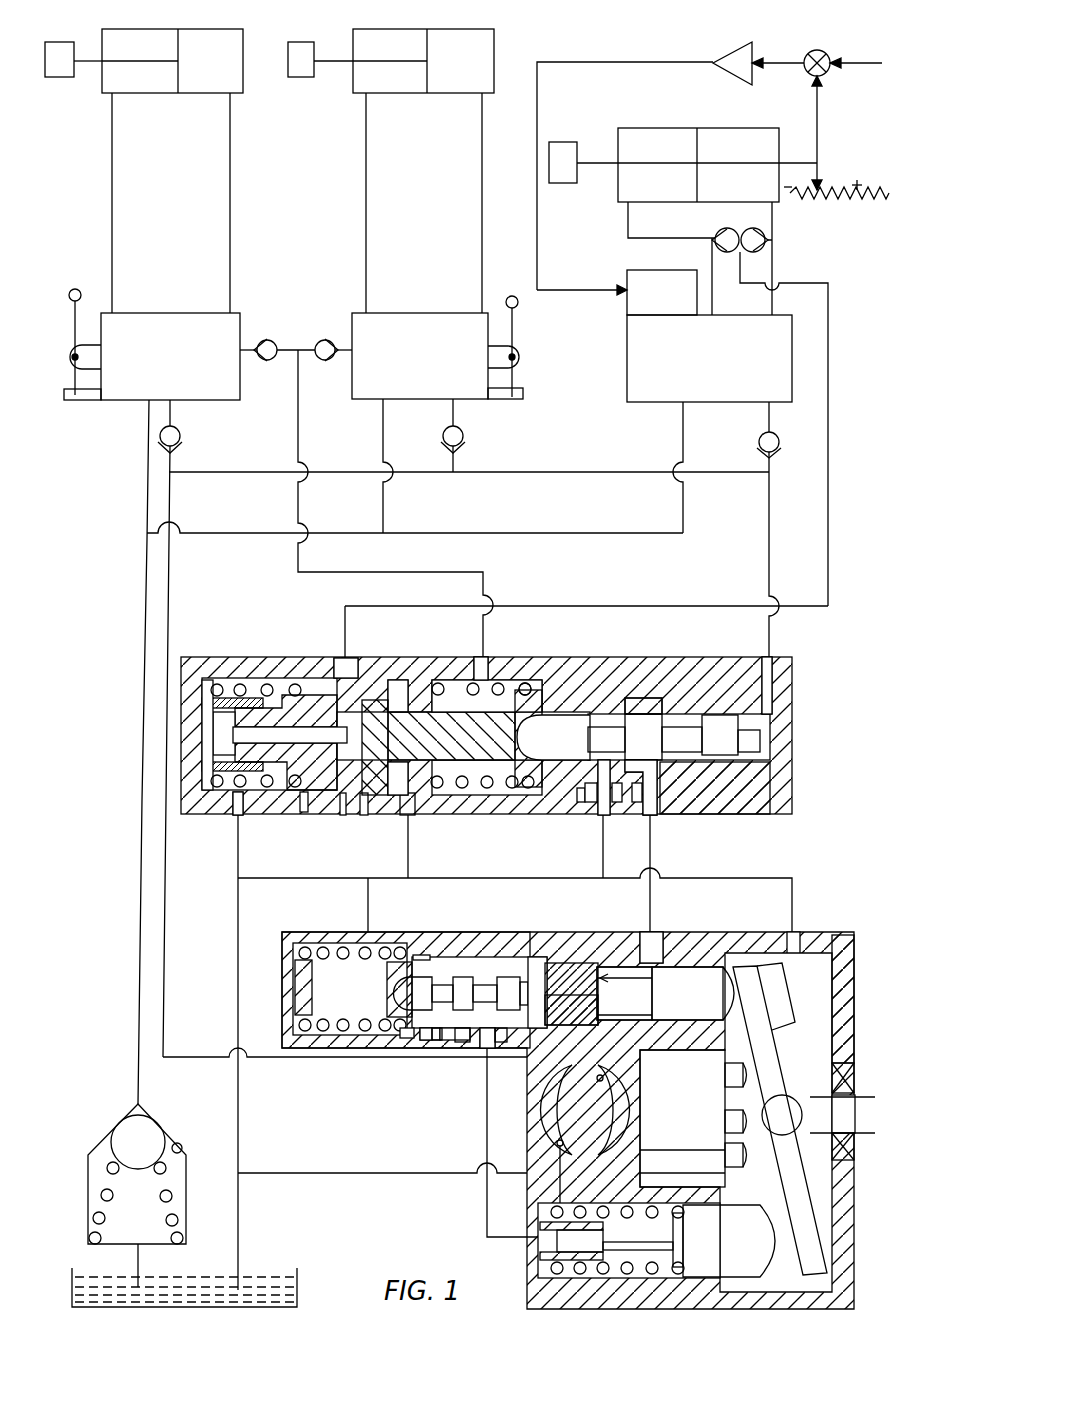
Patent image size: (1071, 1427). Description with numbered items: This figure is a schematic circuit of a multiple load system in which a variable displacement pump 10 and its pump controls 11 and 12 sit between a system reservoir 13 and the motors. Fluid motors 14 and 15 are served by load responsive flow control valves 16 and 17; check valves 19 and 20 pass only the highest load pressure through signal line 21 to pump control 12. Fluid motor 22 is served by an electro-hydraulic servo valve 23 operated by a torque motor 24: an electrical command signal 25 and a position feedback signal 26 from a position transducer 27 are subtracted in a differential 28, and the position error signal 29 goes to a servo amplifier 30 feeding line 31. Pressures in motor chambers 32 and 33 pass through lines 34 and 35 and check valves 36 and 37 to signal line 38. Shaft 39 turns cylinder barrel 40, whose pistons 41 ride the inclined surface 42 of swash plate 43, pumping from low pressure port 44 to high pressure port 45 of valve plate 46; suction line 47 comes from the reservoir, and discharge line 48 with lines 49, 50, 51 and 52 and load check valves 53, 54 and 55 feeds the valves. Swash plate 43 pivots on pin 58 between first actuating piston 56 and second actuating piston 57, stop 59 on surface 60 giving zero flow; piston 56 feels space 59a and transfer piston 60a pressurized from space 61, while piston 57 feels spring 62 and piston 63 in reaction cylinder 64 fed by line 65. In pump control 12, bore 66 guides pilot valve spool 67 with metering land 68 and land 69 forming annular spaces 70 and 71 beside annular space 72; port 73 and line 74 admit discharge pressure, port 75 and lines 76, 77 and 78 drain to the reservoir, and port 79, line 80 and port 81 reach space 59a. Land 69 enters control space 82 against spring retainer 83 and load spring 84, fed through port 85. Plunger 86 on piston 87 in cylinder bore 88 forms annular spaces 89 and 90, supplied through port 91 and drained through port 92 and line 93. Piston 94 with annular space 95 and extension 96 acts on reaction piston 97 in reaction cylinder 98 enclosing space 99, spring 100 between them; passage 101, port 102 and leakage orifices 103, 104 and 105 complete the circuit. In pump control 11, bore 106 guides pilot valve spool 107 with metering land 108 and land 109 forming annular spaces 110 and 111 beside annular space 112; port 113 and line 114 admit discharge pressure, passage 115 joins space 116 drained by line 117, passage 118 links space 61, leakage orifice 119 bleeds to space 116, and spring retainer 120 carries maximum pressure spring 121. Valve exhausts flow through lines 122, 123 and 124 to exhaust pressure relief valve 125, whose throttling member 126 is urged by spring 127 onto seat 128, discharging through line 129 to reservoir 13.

The variable displacement pump 10 is at (843, 925).
The pump control 11 is at (318, 1050).
The pump control 12 is at (794, 800).
The system reservoir 13 is at (298, 1280).
The fluid motor 14 is at (203, 71).
The fluid motor 15 is at (461, 71).
The load responsive flow control valve 16 is at (157, 365).
The load responsive flow control valve 17 is at (402, 365).
The check valve 19 is at (272, 341).
The check valve 20 is at (316, 340).
The signal line 21 is at (300, 413).
The fluid motor 22 is at (678, 126).
The electro-hydraulic servo valve 23 is at (693, 367).
The torque motor 24 is at (651, 302).
The electrical command signal 25 is at (869, 63).
The position feedback signal 26 is at (819, 135).
The position transducer 27 is at (822, 196).
The differential 28 is at (826, 75).
The position error signal 29 is at (783, 65).
The servo amplifier 30 is at (730, 70).
The line 31 is at (539, 109).
The motor chamber 32 is at (736, 192).
The motor chamber 33 is at (656, 192).
The line 34 is at (630, 223).
The line 35 is at (774, 245).
The check valve 36 is at (726, 232).
The check valve 37 is at (750, 232).
The signal line 38 is at (830, 396).
The shaft 39 is at (830, 1122).
The cylinder barrel 40 is at (674, 1109).
The pistons 41 is at (725, 1150).
The inclined surface 42 is at (768, 1168).
The swash plate 43 is at (785, 1058).
The low pressure port 44 is at (561, 1110).
The high pressure port 45 is at (605, 1110).
The valve plate 46 is at (577, 1128).
The suction line 47 is at (376, 1175).
The discharge line 48 is at (201, 1059).
The line 49 is at (172, 458).
The line 50 is at (250, 473).
The line 51 is at (455, 458).
The line 52 is at (771, 463).
The load check valve 53 is at (778, 434).
The load check valve 54 is at (459, 428).
The load check valve 55 is at (178, 428).
The first actuating piston 56 is at (677, 994).
The second actuating piston 57 is at (743, 1234).
The pin 58 is at (775, 1122).
The stop 59 is at (781, 985).
The space 59a is at (652, 1000).
The surface 60 is at (832, 978).
The transfer piston 60a is at (571, 994).
The space 61 is at (571, 1010).
The spring 62 is at (600, 1208).
The piston 63 is at (686, 1246).
The reaction cylinder 64 is at (571, 1241).
The line 65 is at (489, 1132).
The bore 66 is at (743, 815).
The pilot valve spool 67 is at (762, 745).
The metering land 68 is at (636, 744).
The land 69 is at (549, 744).
The annular space 70 is at (603, 714).
The annular space 71 is at (685, 720).
The annular space 72 is at (645, 698).
The port 73 is at (774, 690).
The line 74 is at (771, 545).
The port 75 is at (602, 815).
The line 76 is at (605, 878).
The line 77 is at (504, 878).
The line 78 is at (236, 944).
The port 79 is at (652, 815).
The line 80 is at (654, 870).
The port 81 is at (655, 940).
The control space 82 is at (450, 709).
The spring retainer 83 is at (536, 698).
The load spring 84 is at (526, 682).
The port 85 is at (484, 660).
The plunger 86 is at (433, 744).
The piston 87 is at (367, 782).
The cylinder bore 88 is at (343, 815).
The annular space 89 is at (364, 815).
The annular space 90 is at (399, 690).
The port 91 is at (352, 660).
The port 92 is at (413, 815).
The line 93 is at (410, 866).
The piston 94 is at (306, 815).
The annular space 95 is at (252, 684).
The extension 96 is at (286, 766).
The reaction piston 97 is at (278, 700).
The reaction cylinder 98 is at (222, 700).
The space 99 is at (222, 800).
The spring 100 is at (300, 695).
The passage 101 is at (286, 711).
The port 102 is at (240, 815).
The leakage orifice 103 is at (628, 805).
The leakage orifice 104 is at (580, 805).
The leakage orifice 105 is at (380, 747).
The bore 106 is at (510, 977).
The pilot valve spool 107 is at (480, 1050).
The metering land 108 is at (462, 1042).
The land 109 is at (410, 1040).
The annular space 110 is at (466, 977).
The annular space 111 is at (440, 1040).
The annular space 112 is at (445, 985).
The port 113 is at (502, 1045).
The line 114 is at (488, 1050).
The passage 115 is at (428, 977).
The space 116 is at (323, 998).
The line 117 is at (366, 903).
The passage 118 is at (540, 957).
The leakage orifice 119 is at (428, 1040).
The spring retainer 120 is at (402, 962).
The maximum pressure spring 121 is at (322, 948).
The line 122 is at (685, 433).
The line 123 is at (385, 497).
The line 124 is at (143, 674).
The exhaust pressure relief valve 125 is at (103, 1125).
The throttling member 126 is at (128, 1151).
The spring 127 is at (172, 1196).
The seat 128 is at (180, 1144).
The line 129 is at (140, 1262).